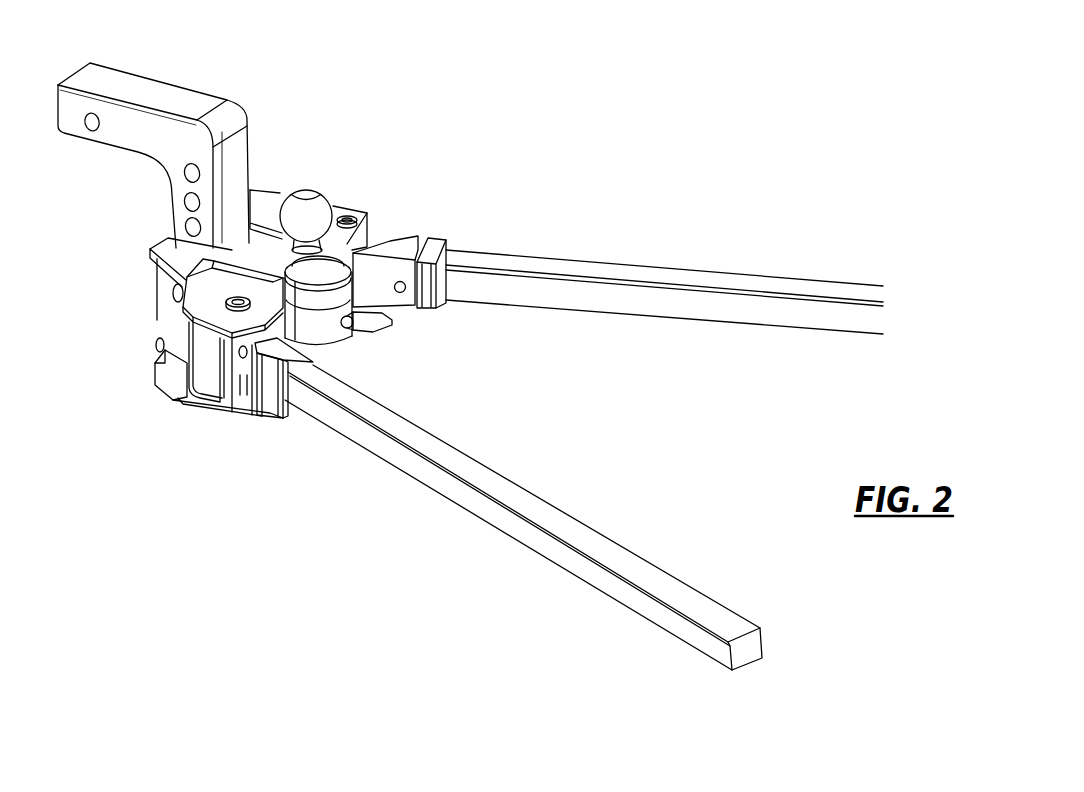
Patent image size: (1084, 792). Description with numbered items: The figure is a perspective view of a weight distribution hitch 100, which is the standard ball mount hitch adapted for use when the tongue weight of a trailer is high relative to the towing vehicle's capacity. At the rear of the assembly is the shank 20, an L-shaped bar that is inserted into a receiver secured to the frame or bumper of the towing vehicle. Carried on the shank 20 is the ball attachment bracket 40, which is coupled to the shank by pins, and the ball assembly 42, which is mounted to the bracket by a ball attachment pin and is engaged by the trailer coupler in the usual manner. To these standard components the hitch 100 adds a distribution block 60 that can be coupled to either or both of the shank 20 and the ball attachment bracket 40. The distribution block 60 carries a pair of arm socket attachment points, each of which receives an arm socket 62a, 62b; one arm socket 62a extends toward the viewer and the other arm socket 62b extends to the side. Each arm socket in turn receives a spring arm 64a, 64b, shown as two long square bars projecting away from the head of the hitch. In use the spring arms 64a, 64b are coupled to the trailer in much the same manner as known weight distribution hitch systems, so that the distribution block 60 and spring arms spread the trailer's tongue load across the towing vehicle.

The weight distribution hitch 100 is at (540, 128).
The shank 20 is at (178, 97).
The distribution block 60 is at (263, 213).
The ball assembly 42 is at (323, 262).
The ball attachment bracket 40 is at (320, 322).
The arm socket 62a is at (242, 353).
The arm socket 62b is at (437, 298).
The spring arm 64a is at (372, 445).
The spring arm 64b is at (557, 263).